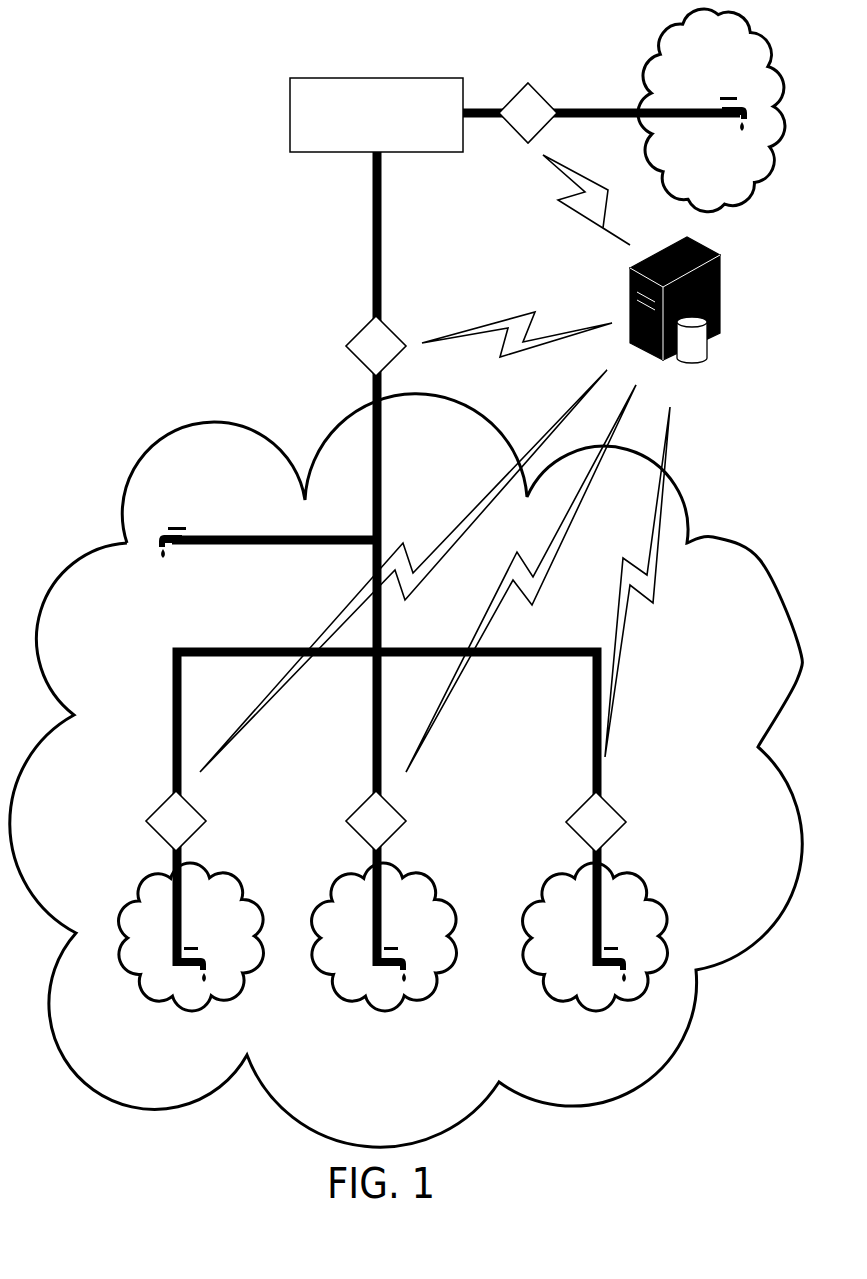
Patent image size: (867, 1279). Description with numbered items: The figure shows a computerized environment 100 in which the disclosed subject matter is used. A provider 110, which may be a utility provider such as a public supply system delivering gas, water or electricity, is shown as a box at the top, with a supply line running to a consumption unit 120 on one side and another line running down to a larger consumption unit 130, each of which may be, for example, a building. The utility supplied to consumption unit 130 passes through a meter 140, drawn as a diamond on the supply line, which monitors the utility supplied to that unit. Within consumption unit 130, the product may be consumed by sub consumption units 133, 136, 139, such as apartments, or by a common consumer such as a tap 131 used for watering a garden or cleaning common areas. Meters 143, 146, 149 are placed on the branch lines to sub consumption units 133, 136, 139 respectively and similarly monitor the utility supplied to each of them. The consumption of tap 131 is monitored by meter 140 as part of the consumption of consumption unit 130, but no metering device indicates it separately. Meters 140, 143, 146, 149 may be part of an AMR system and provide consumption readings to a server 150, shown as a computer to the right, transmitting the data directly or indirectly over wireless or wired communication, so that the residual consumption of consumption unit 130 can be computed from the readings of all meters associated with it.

The computerized environment 100 is at (143, 117).
The provider 110 is at (290, 115).
The consumption unit 120 is at (636, 134).
The consumption unit 130 is at (152, 463).
The tap 131 is at (163, 562).
The sub consumption unit 133 is at (192, 1012).
The sub consumption unit 136 is at (382, 1012).
The sub consumption unit 139 is at (594, 1011).
The meter 140 is at (355, 332).
The meter 143 is at (155, 806).
The meter 146 is at (348, 806).
The meter 149 is at (572, 810).
The server 150 is at (720, 325).